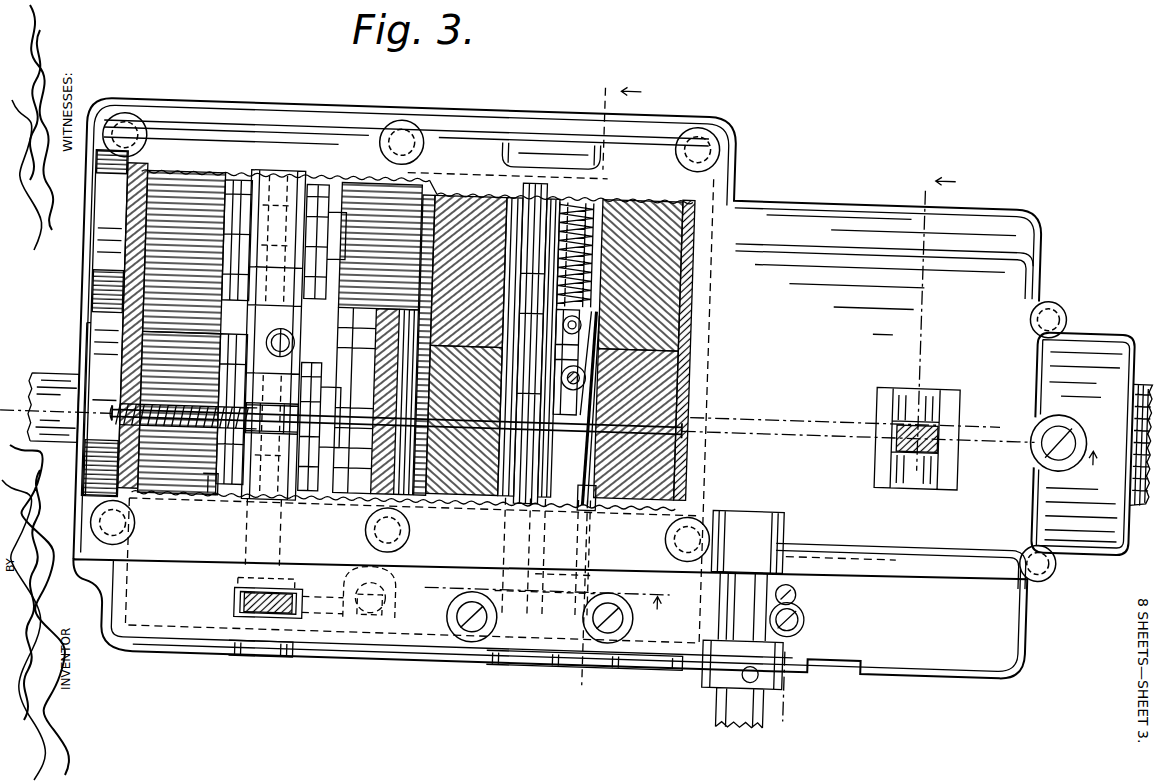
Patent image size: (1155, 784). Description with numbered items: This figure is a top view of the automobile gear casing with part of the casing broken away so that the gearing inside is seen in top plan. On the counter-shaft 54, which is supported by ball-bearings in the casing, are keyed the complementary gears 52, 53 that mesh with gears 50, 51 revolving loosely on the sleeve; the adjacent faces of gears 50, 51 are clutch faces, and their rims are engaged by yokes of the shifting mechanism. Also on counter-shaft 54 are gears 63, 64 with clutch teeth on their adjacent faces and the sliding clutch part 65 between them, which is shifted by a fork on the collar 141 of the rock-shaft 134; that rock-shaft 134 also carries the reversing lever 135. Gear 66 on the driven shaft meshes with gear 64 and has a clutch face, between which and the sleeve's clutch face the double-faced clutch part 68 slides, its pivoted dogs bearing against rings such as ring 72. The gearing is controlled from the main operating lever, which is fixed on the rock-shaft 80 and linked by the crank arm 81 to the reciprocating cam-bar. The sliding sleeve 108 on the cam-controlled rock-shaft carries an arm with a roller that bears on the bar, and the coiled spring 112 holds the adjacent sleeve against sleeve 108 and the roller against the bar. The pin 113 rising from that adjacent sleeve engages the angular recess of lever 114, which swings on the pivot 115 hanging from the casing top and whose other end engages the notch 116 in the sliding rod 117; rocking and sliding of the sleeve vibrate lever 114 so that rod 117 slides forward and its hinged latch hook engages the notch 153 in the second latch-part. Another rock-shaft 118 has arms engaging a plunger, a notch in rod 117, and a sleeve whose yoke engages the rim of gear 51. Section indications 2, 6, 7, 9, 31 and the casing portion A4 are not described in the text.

The screw / view arrow 2 is at (1072, 443).
The section line 6- 6 is at (610, 392).
The section line 7- 7 is at (868, 453).
The section line 9- 9 is at (514, 597).
The bracket 31 is at (940, 404).
The gear 50 is at (691, 443).
The gear 51 is at (452, 469).
The complementary gear 52 is at (641, 203).
The complementary gear 53 is at (472, 198).
The counter-shaft 54 is at (422, 207).
The gear 63 is at (356, 199).
The gear 64 is at (154, 221).
The clutch part 65 is at (236, 175).
The gear 66 is at (184, 465).
The double-faced clutch part 68 is at (305, 354).
The ring 72 is at (213, 499).
The rock-shaft 80 is at (739, 573).
The crank arm 81 is at (757, 630).
The sliding sleeve 108 is at (596, 498).
The coiled spring 112 is at (596, 182).
The pin 113 is at (597, 302).
The lever 114 is at (603, 329).
The pivot 115 is at (587, 365).
The notch 116 is at (578, 442).
The sliding rod 117 is at (690, 409).
The rock-shaft 118 is at (525, 477).
The rock-shaft 134 is at (285, 177).
The reversing lever 135 is at (240, 598).
The collar 141 is at (254, 318).
The notch 153 is at (290, 334).
The housing section A4 is at (910, 599).